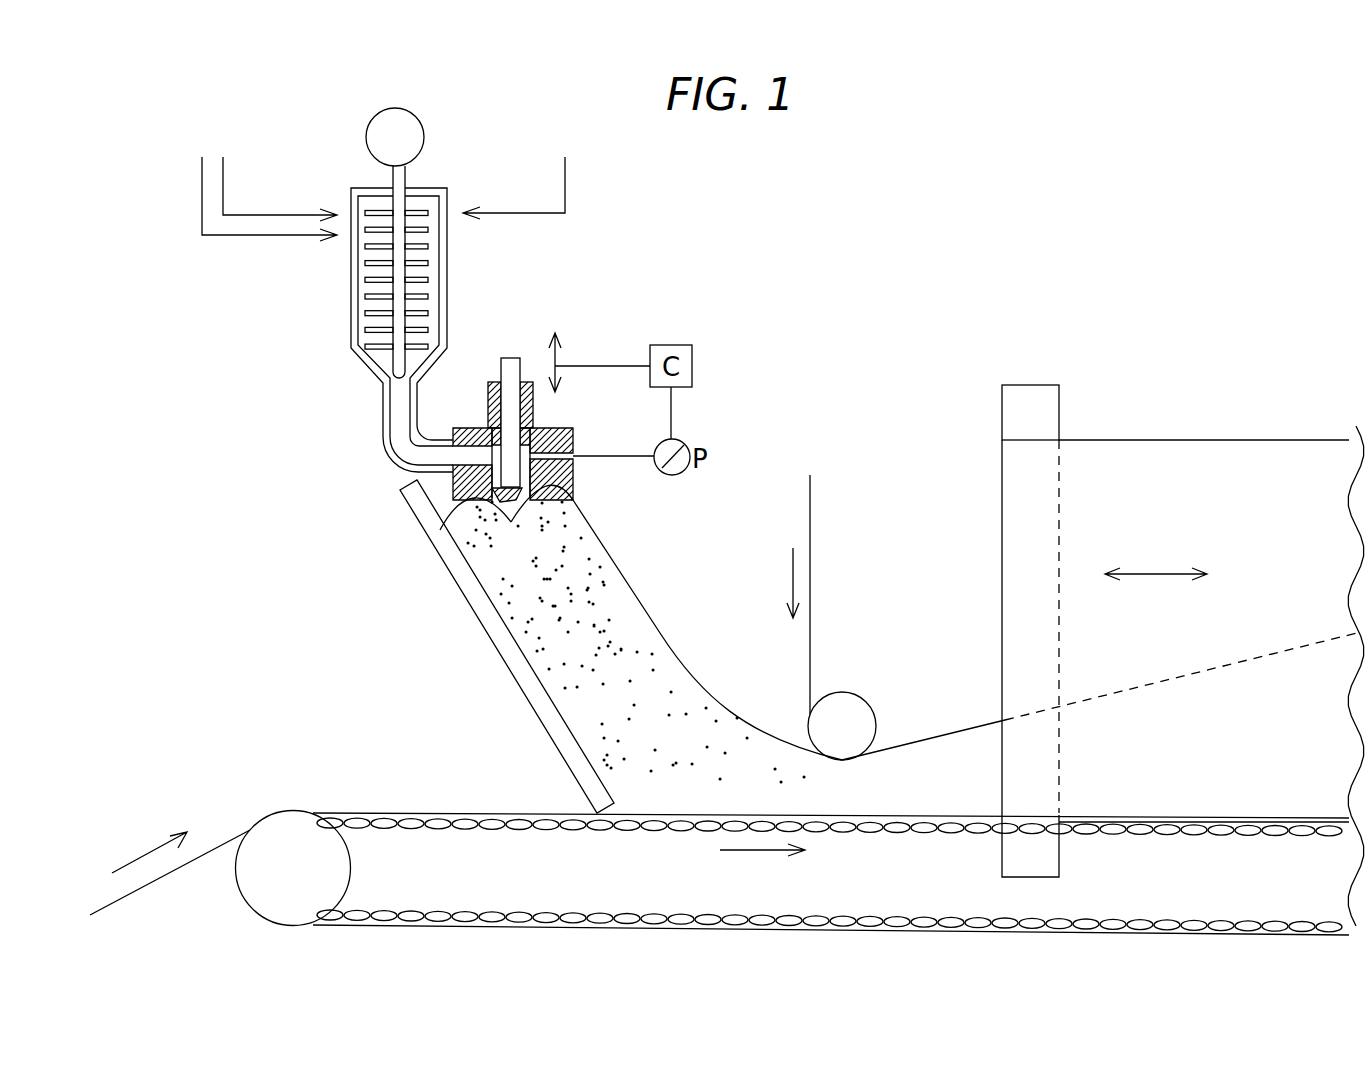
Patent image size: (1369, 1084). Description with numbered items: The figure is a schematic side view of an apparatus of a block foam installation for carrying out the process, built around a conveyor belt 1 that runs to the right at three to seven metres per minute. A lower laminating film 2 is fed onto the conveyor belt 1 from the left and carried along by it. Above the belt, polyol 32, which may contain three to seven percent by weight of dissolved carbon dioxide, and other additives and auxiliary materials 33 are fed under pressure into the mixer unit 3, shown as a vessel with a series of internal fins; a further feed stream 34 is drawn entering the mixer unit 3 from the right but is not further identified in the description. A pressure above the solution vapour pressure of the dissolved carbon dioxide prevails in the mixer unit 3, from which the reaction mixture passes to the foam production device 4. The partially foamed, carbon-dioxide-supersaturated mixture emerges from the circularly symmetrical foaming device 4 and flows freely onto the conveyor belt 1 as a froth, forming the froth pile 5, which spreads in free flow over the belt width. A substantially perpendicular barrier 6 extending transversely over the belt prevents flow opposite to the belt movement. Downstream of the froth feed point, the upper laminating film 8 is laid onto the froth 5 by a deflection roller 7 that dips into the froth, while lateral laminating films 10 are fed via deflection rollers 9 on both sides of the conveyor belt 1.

The conveyor belt 1 is at (405, 827).
The lower laminating film 2 is at (150, 883).
The mixer unit 3 is at (447, 265).
The foam production device 4 is at (573, 477).
The froth pile 5 is at (587, 557).
The barrier 6 is at (470, 592).
The deflection roller 7 is at (853, 703).
The upper laminating film 8 is at (810, 643).
The deflection rollers 9 is at (1060, 392).
The lateral laminating films 10 is at (1179, 448).
The polyol 32 is at (265, 213).
The additives and auxiliary materials 33 is at (247, 237).
The third inlet 34 is at (505, 215).